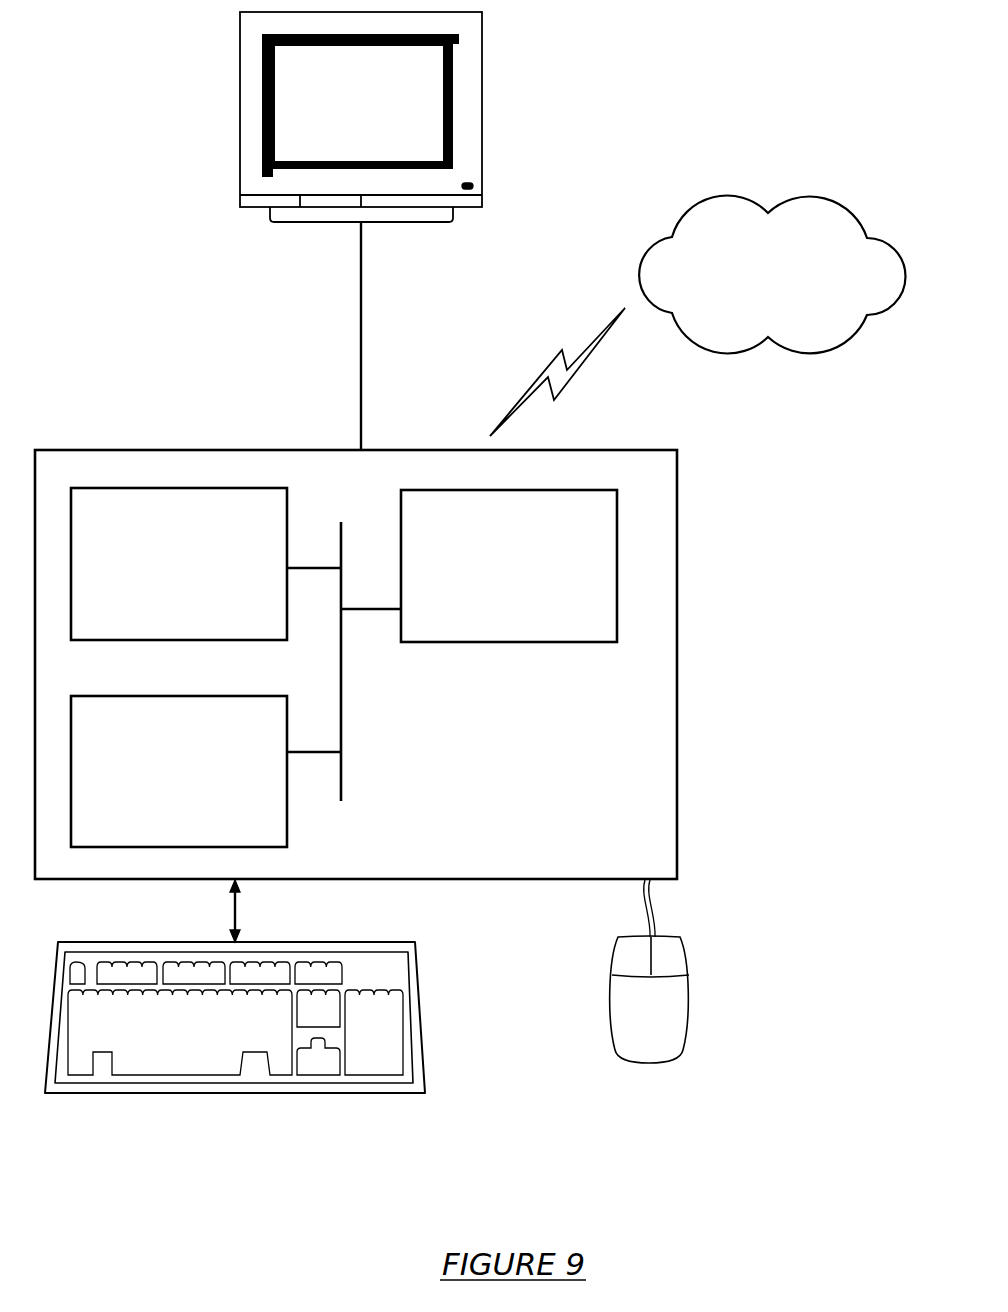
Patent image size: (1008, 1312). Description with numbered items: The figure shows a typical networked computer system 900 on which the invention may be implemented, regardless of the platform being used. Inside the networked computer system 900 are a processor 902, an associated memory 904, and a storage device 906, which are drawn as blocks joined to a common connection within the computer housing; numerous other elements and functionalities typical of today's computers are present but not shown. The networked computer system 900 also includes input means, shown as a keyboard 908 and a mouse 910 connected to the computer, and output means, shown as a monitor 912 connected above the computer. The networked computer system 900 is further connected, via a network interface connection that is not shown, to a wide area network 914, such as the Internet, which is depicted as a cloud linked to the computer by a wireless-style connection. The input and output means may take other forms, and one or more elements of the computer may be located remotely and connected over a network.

The networked computer system 900 is at (703, 714).
The processor 902 is at (544, 576).
The memory 904 is at (197, 576).
The storage device 906 is at (194, 782).
The keyboard 908 is at (189, 1054).
The mouse 910 is at (669, 1016).
The monitor 912 is at (371, 121).
The wide area network 914 is at (764, 298).